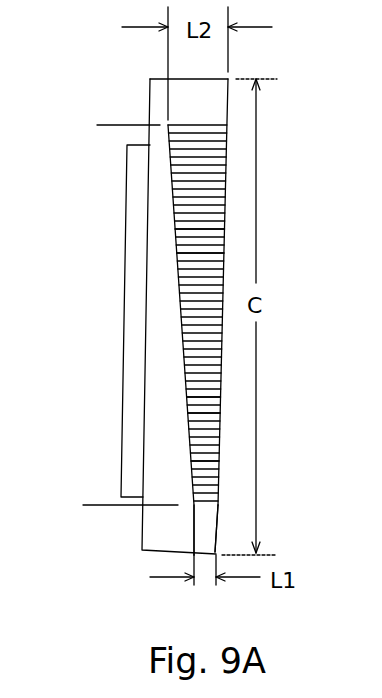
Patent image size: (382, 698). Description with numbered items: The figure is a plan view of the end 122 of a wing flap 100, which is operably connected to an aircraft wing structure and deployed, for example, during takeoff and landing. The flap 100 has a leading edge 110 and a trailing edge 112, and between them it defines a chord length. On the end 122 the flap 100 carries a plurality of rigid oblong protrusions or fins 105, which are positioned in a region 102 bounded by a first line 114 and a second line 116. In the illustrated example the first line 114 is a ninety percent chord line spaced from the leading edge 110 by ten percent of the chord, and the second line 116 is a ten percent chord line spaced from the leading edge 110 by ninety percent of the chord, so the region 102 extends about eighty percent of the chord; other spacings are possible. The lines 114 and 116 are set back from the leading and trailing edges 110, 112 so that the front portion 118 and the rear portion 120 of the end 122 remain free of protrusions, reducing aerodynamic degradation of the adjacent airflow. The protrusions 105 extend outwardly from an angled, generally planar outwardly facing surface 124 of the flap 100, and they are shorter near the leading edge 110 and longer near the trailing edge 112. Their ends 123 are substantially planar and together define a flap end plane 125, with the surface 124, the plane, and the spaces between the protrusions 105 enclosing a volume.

The wing flap 100 is at (123, 335).
The region 102 is at (213, 463).
The protrusions 105 is at (213, 220).
The leading edge 110 is at (157, 552).
The trailing edge 112 is at (157, 78).
The first line 114 is at (98, 505).
The second line 116 is at (110, 124).
The front portion 118 is at (215, 547).
The rear portion 120 is at (228, 118).
The end 122 is at (223, 417).
The ends 123 is at (228, 240).
The outwardly facing surface 124 is at (190, 398).
The flap end plane 125 is at (228, 258).